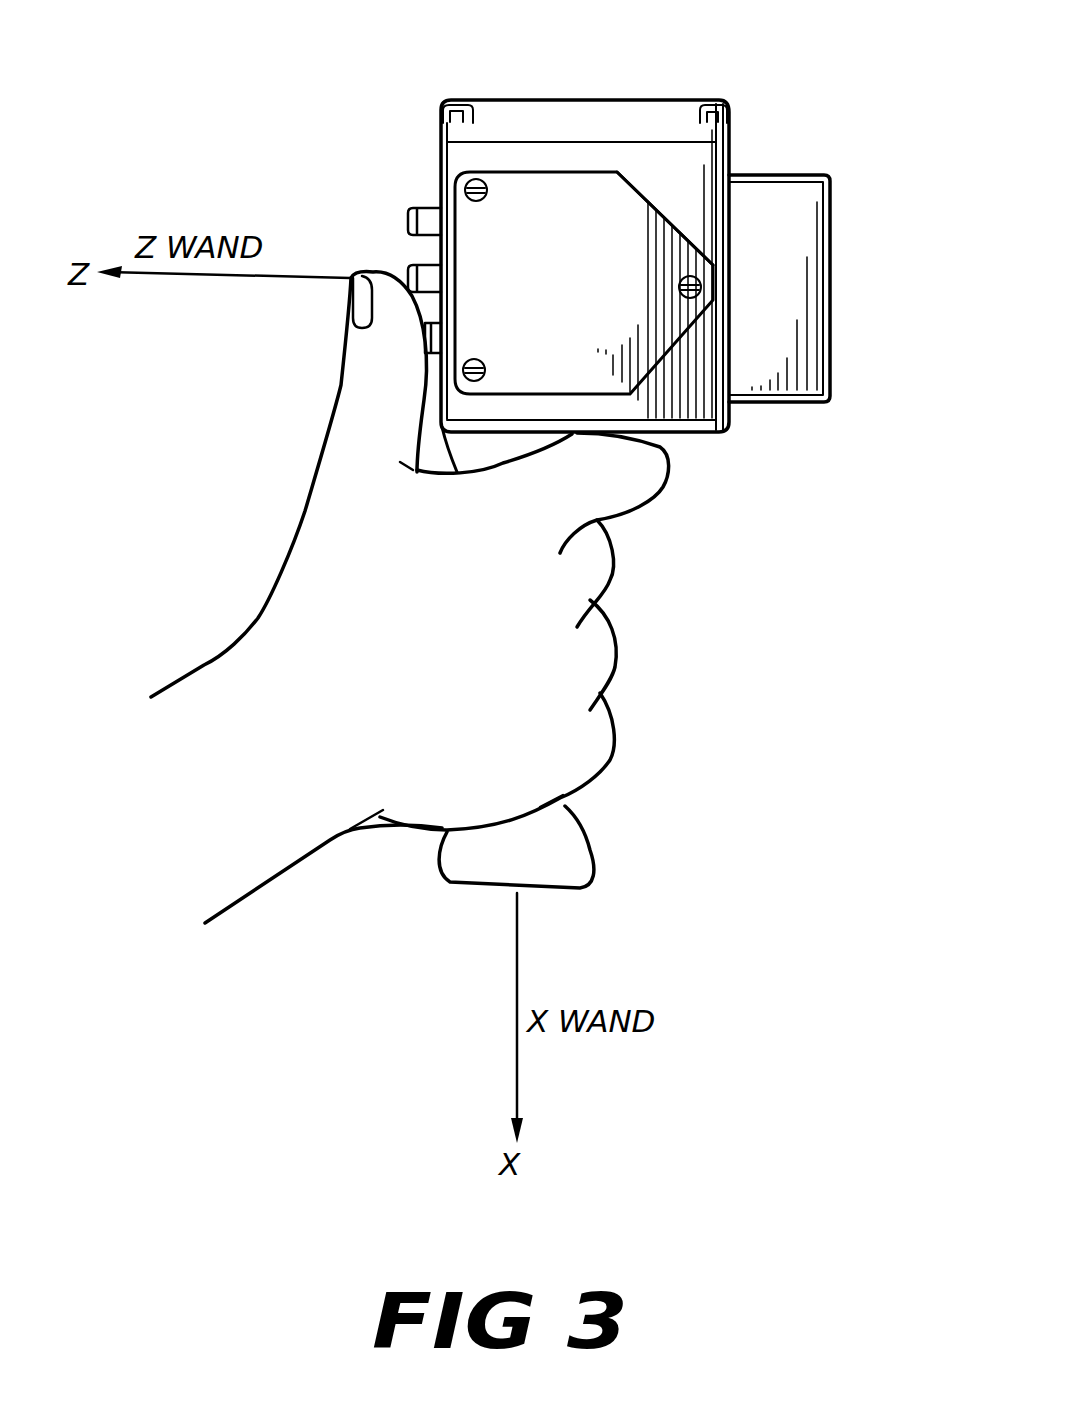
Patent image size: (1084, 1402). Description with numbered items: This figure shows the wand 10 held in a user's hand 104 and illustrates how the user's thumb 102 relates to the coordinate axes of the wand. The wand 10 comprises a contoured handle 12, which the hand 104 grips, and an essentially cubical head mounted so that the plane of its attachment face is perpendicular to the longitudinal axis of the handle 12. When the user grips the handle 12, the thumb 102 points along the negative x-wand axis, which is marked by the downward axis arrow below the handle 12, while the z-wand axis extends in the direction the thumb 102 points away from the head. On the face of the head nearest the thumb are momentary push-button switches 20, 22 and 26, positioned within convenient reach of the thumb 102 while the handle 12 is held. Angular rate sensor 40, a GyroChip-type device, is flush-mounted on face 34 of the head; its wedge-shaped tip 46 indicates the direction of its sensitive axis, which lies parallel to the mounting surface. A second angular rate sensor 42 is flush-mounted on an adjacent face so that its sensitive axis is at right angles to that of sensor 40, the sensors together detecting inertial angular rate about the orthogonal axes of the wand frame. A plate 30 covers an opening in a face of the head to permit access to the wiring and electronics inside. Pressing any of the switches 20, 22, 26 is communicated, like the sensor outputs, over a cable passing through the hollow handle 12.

The wand 10 is at (838, 468).
The handle 12 is at (577, 860).
The momentary push-button switch 20 is at (428, 212).
The momentary push-button switch 22 is at (430, 340).
The momentary push-button switch 26 is at (423, 272).
The plate 30 is at (647, 100).
The face 34 is at (555, 152).
The angular rate sensor 40 is at (640, 350).
The angular rate sensor 42 is at (815, 290).
The wedge-shaped tip 46 is at (673, 222).
The thumb 102 is at (366, 351).
The hand 104 is at (362, 626).